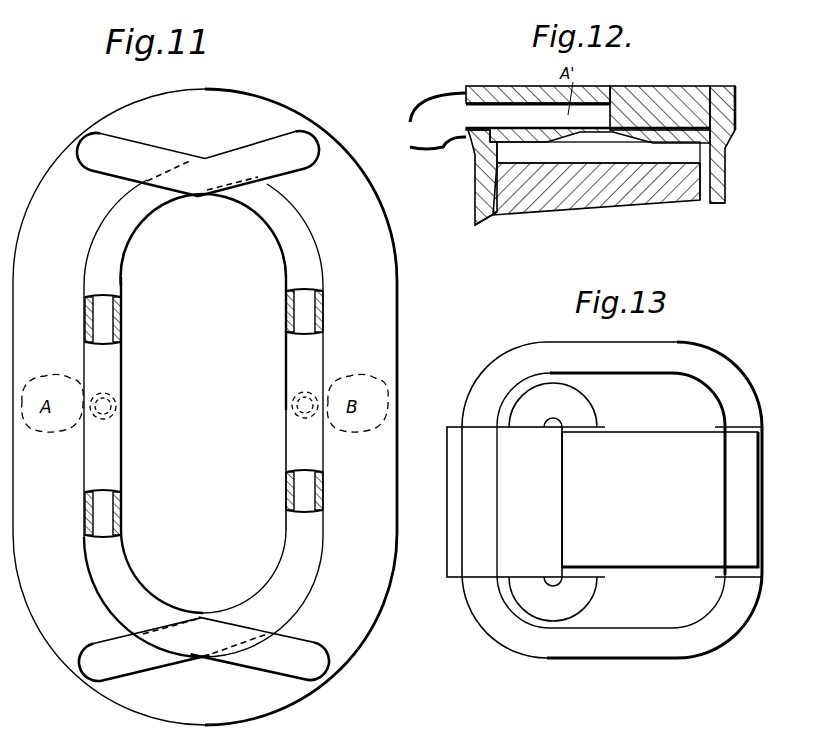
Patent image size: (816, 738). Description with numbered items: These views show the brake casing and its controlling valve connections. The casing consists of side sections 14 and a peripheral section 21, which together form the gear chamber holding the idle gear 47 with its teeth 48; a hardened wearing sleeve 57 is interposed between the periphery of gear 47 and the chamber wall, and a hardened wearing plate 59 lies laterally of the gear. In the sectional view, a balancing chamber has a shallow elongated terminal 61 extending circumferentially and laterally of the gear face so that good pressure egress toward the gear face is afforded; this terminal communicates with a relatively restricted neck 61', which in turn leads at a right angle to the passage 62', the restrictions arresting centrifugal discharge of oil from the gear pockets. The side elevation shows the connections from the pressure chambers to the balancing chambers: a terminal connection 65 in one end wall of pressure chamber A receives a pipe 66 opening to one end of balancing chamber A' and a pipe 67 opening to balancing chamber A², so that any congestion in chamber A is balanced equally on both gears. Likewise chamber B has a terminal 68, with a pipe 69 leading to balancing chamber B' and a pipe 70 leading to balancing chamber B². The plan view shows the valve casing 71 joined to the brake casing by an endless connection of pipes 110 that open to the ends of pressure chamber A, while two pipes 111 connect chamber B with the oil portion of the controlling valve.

In FIG. 11, the side sections 14 is at (370, 322).
In FIG. 12, the side sections 14 is at (477, 183).
In FIG. 13, the side sections 14 is at (675, 438).
In FIG. 11, the pipe 66 is at (112, 288).
In FIG. 12, the pipe 66 is at (418, 122).
In FIG. 11, the pipe 69 is at (293, 258).
In FIG. 11, the terminal connection 65 is at (122, 394).
In FIG. 11, the pipe 67 is at (110, 480).
In FIG. 11, the terminal 68 is at (287, 385).
In FIG. 11, the pipe 70 is at (291, 536).
In FIG. 12, the passage 62' is at (538, 90).
In FIG. 12, the restricted neck 61' is at (588, 104).
In FIG. 12, the elongated terminal 61 is at (598, 153).
In FIG. 12, the peripheral section 21 is at (663, 98).
In FIG. 13, the peripheral section 21 is at (758, 520).
In FIG. 12, the hardened wearing sleeve 57 is at (670, 125).
In FIG. 12, the gear 47 is at (587, 188).
In FIG. 12, the teeth 48 is at (638, 148).
In FIG. 12, the hardened wearing plate 59 is at (492, 212).
In FIG. 13, the pipes 111 is at (698, 353).
In FIG. 13, the pipes 110 is at (582, 412).
In FIG. 13, the valve casing 71 is at (455, 558).